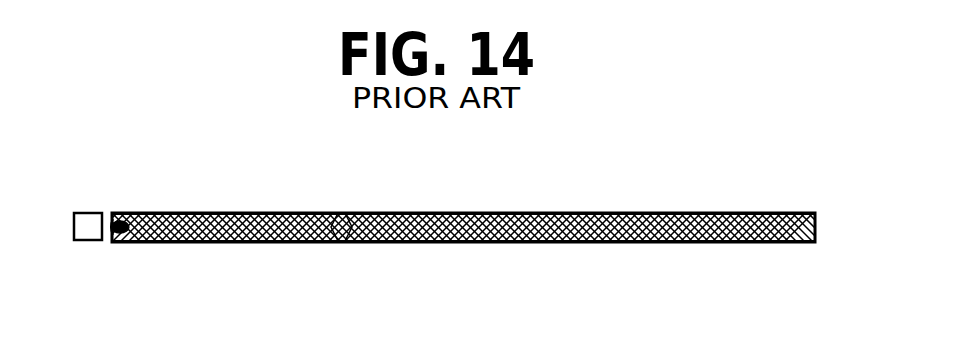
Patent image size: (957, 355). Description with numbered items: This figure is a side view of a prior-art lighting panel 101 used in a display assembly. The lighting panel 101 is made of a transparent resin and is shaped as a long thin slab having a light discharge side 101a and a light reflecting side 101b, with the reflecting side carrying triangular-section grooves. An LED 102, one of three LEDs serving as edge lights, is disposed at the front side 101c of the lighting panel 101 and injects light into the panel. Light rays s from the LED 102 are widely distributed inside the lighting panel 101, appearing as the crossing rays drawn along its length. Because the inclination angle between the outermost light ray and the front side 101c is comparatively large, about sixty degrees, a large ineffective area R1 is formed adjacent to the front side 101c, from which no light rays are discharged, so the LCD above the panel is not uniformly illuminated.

The lighting panel 101 is at (613, 212).
The light discharge side 101a is at (530, 242).
The light reflecting side 101b is at (563, 212).
The front side 101c is at (108, 241).
The LED 102 is at (102, 213).
The ineffective area R1 is at (109, 222).
The light rays s is at (345, 212).